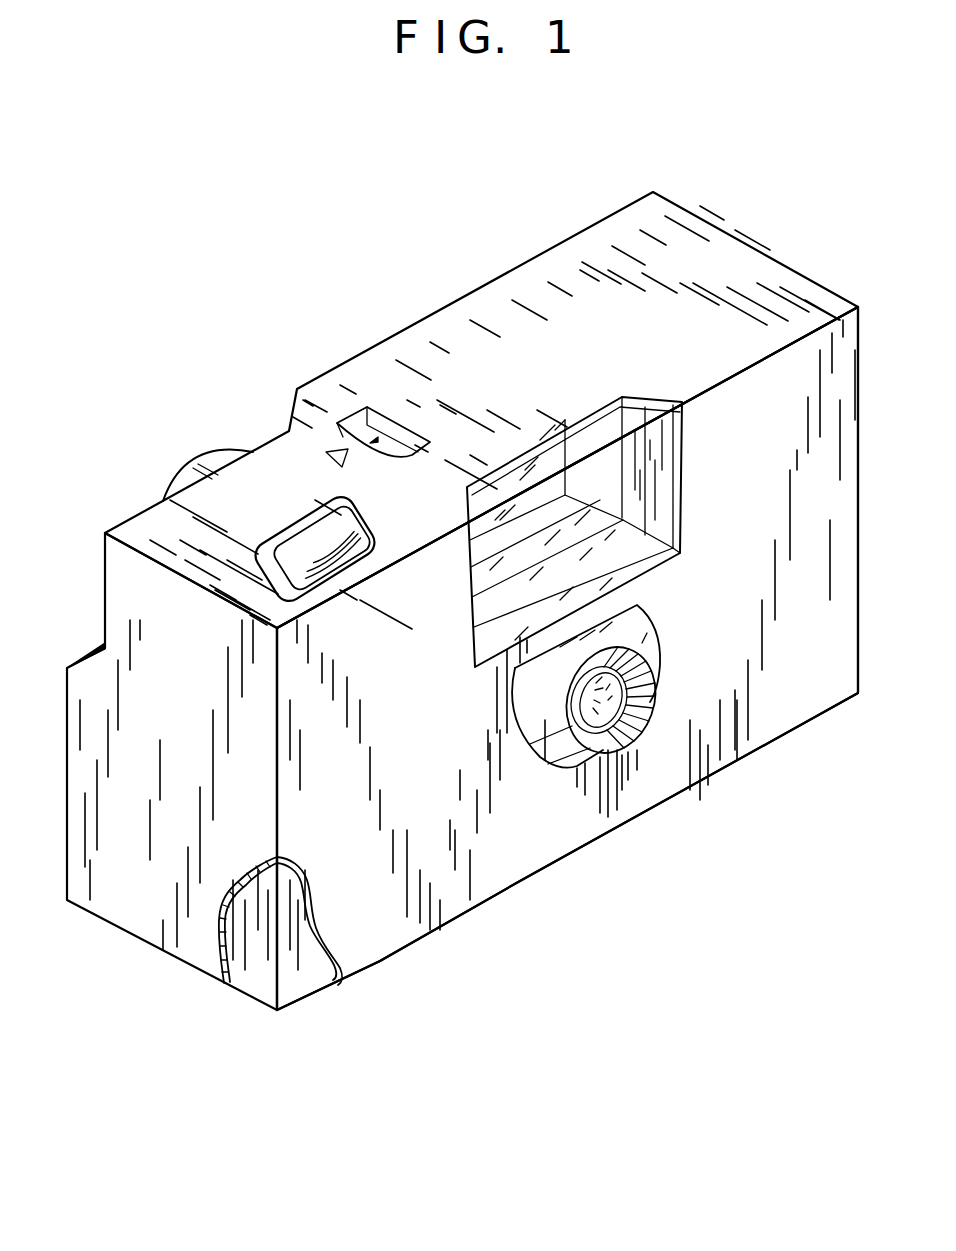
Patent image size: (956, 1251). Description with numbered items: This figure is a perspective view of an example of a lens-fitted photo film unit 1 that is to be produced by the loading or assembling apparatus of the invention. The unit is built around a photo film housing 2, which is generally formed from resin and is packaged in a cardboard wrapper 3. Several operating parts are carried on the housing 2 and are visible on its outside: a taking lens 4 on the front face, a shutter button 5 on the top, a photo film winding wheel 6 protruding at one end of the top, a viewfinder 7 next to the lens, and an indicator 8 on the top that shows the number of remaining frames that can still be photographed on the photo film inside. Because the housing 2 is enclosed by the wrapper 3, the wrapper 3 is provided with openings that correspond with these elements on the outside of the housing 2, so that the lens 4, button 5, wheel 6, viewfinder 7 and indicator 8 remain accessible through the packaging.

The lens-fitted photo film unit 1 is at (518, 218).
The photo film housing 2 is at (259, 990).
The cardboard wrapper 3 is at (521, 879).
The taking lens 4 is at (627, 703).
The shutter button 5 is at (307, 537).
The photo film winding wheel 6 is at (212, 457).
The viewfinder 7 is at (620, 560).
The indicator 8 is at (385, 440).